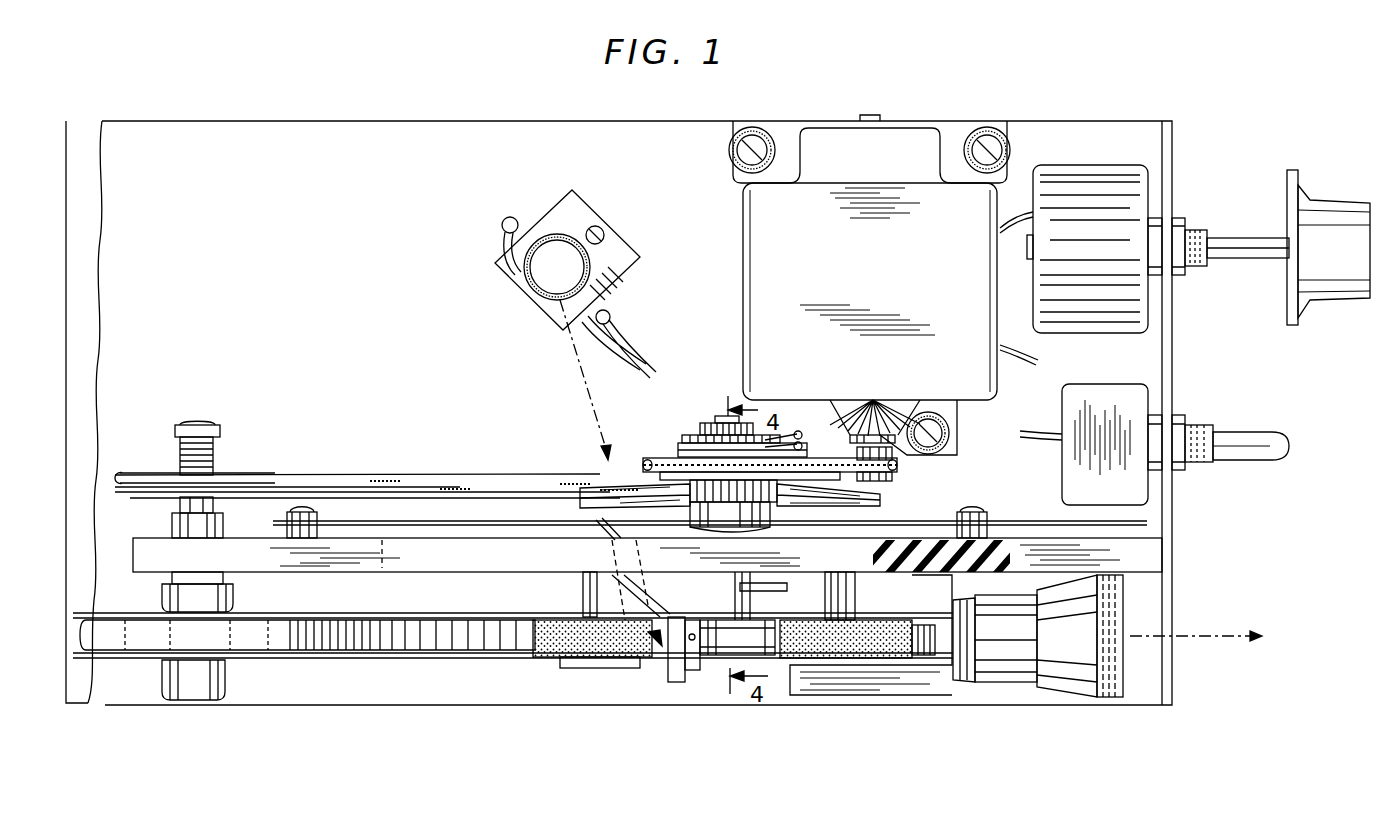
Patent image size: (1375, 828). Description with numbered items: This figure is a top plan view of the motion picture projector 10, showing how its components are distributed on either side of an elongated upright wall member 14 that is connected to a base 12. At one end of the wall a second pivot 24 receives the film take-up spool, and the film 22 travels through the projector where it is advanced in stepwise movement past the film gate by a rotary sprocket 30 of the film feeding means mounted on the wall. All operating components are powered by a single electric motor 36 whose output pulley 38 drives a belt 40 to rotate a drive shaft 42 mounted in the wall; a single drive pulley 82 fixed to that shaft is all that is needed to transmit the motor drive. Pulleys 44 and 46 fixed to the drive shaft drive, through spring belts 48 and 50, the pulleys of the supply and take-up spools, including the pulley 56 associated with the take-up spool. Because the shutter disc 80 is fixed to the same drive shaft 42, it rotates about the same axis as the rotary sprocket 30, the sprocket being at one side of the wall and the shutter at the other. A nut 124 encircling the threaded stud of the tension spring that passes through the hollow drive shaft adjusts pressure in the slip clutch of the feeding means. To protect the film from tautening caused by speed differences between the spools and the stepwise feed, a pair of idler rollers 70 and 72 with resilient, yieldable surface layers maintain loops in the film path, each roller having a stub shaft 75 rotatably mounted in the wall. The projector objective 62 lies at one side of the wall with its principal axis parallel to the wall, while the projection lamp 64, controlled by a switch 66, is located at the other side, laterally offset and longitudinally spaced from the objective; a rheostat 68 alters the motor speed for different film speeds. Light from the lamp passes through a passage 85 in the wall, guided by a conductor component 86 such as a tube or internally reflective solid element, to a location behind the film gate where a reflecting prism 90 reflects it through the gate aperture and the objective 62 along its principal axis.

The motion picture projector 10 is at (398, 338).
The base 12 is at (226, 274).
The upright wall member 14 is at (417, 566).
The film 22 is at (945, 628).
The second pivot 24 is at (193, 700).
The rotary sprocket 30 is at (715, 672).
The electric motor 36 is at (874, 266).
The output pulley 38 is at (893, 452).
The belt 40 is at (820, 470).
The drive shaft 42 is at (727, 420).
The pulley 44 is at (684, 438).
The pulley 46 is at (770, 497).
The spring belt 48 is at (800, 440).
The spring belt 50 is at (375, 478).
The pulley 56 is at (262, 475).
The projector objective 62 is at (1076, 684).
The projection lamp 64 is at (548, 238).
The switch 66 is at (1252, 443).
The rheostat 68 is at (1093, 180).
The idler roller 70 is at (890, 668).
The idler roller 72 is at (640, 660).
The stub shaft 75 is at (592, 588).
The shutter disc 80 is at (855, 503).
The drive pulley 82 is at (655, 460).
The passage 85 is at (625, 549).
The conductor component 86 is at (600, 532).
The reflecting prism 90 is at (660, 650).
The nut 124 is at (712, 422).